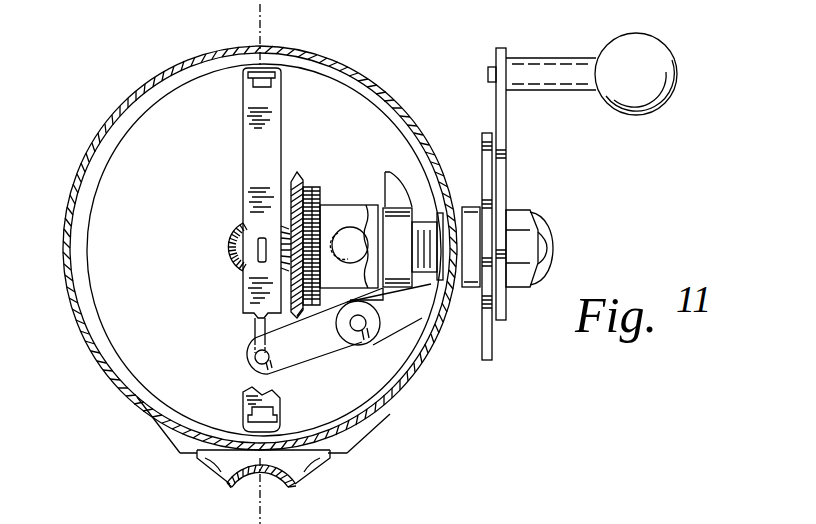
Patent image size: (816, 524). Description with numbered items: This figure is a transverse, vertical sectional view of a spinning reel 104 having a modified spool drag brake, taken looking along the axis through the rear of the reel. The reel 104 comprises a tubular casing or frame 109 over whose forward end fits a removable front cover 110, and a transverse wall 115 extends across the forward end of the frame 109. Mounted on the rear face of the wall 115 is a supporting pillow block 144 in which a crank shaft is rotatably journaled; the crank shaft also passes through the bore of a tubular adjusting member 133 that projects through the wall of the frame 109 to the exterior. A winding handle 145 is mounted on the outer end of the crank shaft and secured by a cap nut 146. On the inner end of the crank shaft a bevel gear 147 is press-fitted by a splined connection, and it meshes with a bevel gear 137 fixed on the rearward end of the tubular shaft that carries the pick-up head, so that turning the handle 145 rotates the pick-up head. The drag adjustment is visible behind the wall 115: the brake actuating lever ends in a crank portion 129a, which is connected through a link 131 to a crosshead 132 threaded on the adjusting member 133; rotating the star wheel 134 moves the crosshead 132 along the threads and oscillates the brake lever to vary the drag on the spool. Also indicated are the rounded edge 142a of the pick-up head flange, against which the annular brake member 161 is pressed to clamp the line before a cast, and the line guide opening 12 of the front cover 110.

The line guide opening 12 is at (254, 18).
The reel 104 is at (350, 54).
The tubular casing or frame 109 is at (367, 86).
The transverse wall 115 is at (110, 172).
The crank portion 129a is at (254, 334).
The link 131 is at (298, 354).
The crosshead 132 is at (370, 344).
The tubular adjusting member 133 is at (418, 221).
The star wheel 134 is at (487, 187).
The bevel gear 137 is at (230, 242).
The pillow block 144 is at (364, 214).
The winding handle 145 is at (502, 125).
The cap nut 146 is at (547, 249).
The bevel gear 147 is at (300, 174).
The rounded inner edge of flange 142a is at (337, 523).
The annular brake member 161 is at (352, 523).
The front cover 110 is at (390, 518).